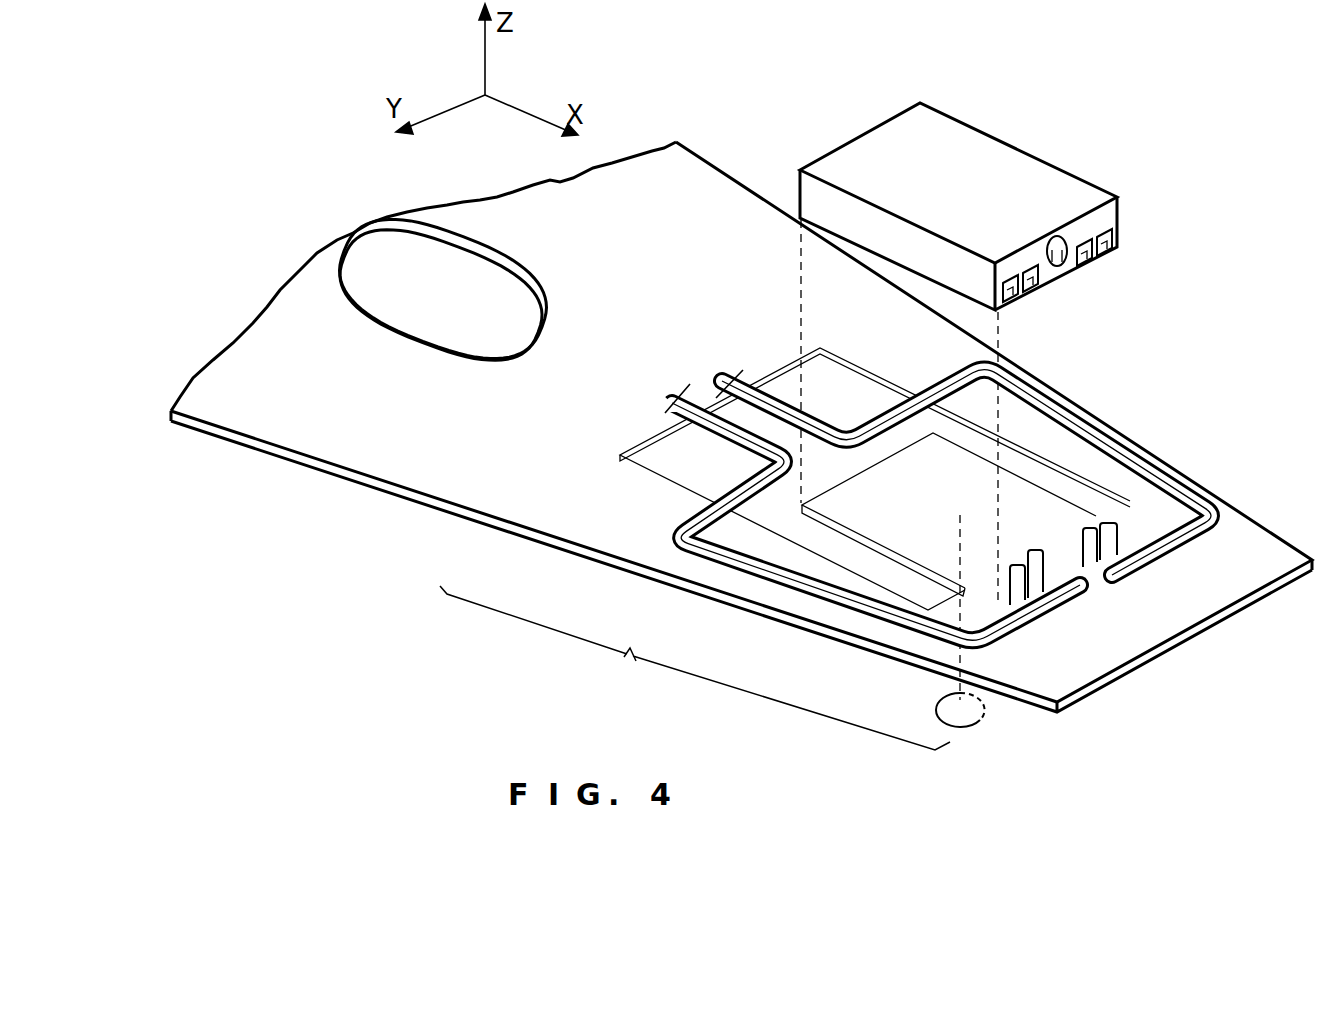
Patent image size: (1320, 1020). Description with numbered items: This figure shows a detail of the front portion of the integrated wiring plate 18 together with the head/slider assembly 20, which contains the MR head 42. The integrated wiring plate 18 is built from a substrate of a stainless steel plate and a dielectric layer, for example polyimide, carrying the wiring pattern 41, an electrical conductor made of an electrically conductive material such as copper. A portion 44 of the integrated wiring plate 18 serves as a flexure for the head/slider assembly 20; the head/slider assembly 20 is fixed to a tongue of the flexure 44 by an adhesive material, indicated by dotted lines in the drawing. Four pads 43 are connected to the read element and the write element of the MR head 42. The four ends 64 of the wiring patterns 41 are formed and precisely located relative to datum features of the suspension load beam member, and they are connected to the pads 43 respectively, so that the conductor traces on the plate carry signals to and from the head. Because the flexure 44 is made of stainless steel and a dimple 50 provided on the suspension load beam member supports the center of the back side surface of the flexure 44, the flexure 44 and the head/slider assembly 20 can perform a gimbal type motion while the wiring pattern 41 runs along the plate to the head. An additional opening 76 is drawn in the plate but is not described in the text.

The integrated wiring plate 18 is at (492, 499).
The head/slider assembly 20 is at (985, 145).
The wiring pattern 41 is at (1130, 448).
The MR head 42 is at (1058, 240).
The pads 43 is at (1108, 256).
The flexure 44 is at (695, 668).
The dimple 50 is at (935, 707).
The ends of the wiring patterns 64 is at (1015, 562).
The opening 76 is at (407, 228).